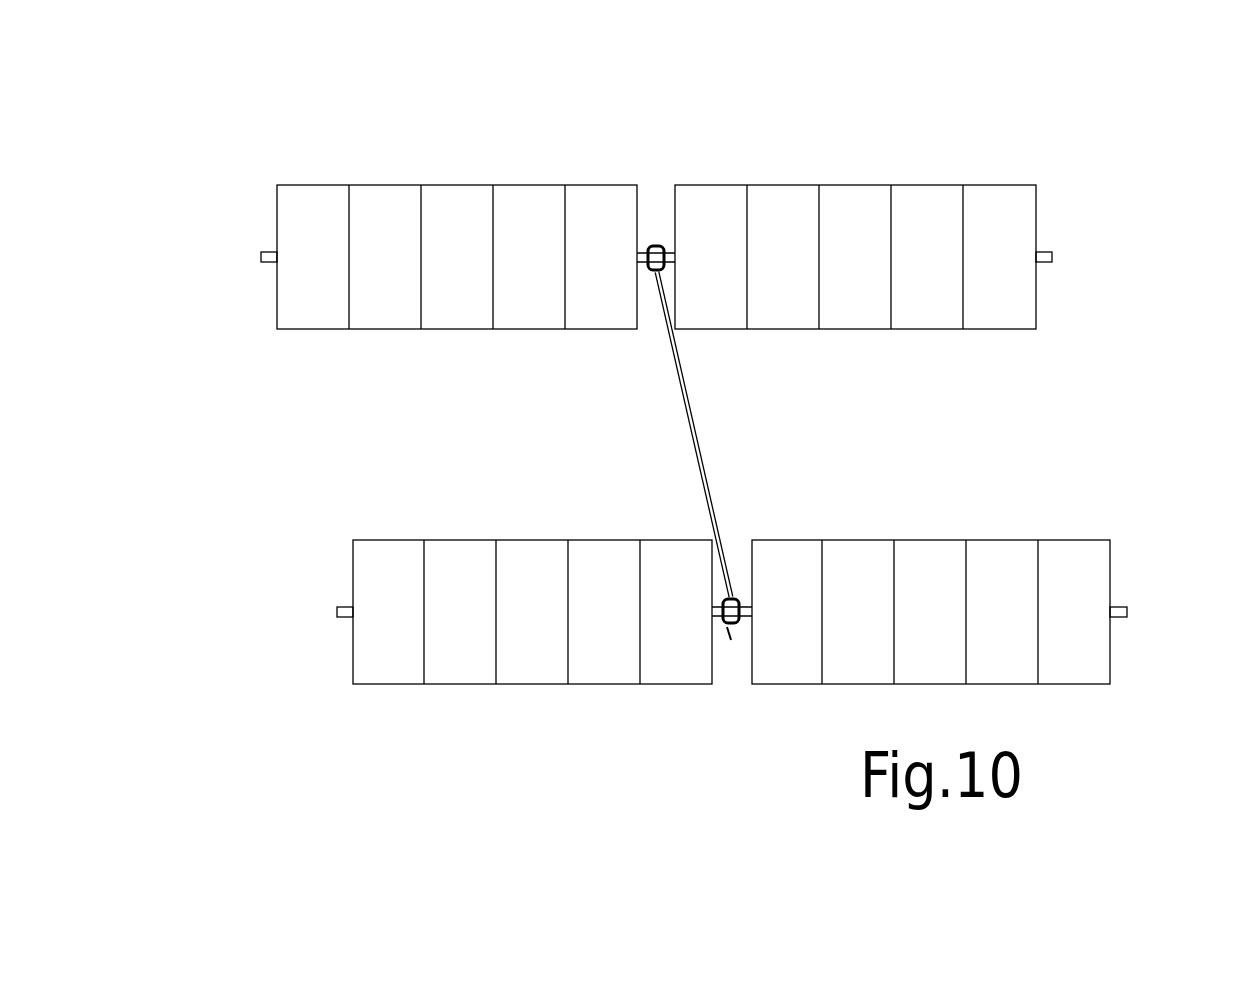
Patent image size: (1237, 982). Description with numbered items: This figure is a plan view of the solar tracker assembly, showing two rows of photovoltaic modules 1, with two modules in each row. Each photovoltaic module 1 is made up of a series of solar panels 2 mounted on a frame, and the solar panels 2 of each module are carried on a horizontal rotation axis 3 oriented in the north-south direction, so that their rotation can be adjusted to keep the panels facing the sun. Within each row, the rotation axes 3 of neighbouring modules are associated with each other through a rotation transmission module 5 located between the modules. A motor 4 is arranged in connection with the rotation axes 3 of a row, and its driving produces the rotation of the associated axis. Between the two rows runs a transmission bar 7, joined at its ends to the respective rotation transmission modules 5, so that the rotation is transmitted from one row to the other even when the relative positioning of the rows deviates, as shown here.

The photovoltaic module 1 is at (262, 338).
The solar panel 2 is at (532, 203).
The horizontal rotation axis 3 is at (267, 253).
The motor 4 is at (730, 637).
The rotation transmission module 5 is at (653, 245).
The transmission bar 7 is at (697, 418).